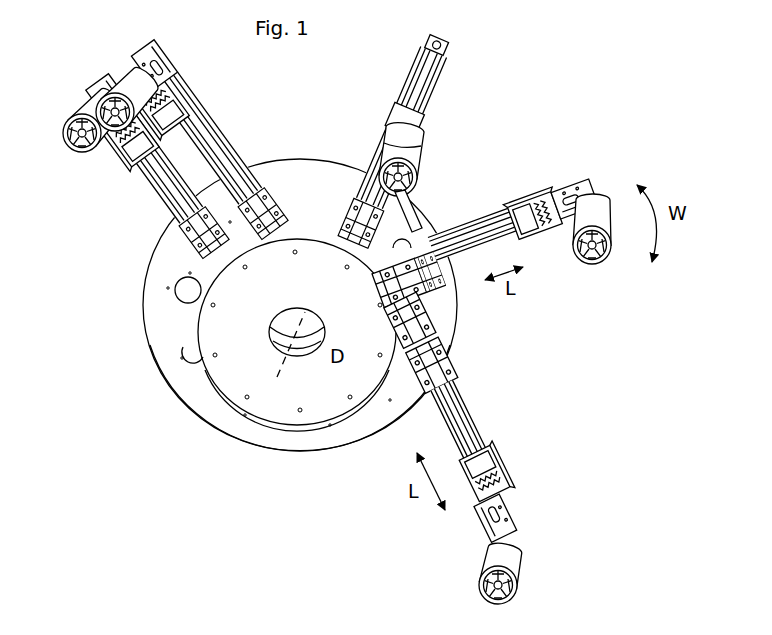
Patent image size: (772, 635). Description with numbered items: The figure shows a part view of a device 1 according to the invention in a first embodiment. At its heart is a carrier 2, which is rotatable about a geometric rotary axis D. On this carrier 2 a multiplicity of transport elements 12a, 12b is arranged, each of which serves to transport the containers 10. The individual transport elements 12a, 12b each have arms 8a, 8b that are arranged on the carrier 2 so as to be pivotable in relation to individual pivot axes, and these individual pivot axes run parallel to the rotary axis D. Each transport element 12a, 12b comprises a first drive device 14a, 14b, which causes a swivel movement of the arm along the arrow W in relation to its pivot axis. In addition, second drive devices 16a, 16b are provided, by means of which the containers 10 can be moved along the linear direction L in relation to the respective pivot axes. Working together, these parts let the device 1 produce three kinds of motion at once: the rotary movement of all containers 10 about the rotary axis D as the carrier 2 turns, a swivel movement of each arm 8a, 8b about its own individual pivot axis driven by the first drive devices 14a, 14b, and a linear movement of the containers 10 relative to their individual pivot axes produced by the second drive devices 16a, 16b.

The device 1 is at (187, 470).
The carrier 2 is at (272, 437).
The arm 8a is at (477, 422).
The arm 8b is at (482, 225).
The container 10 is at (413, 155).
The transport element 12a is at (537, 530).
The transport element 12b is at (599, 163).
The first drive device 14a is at (458, 365).
The first drive device 14b is at (400, 237).
The second drive device 16a is at (508, 472).
The second drive device 16b is at (553, 182).